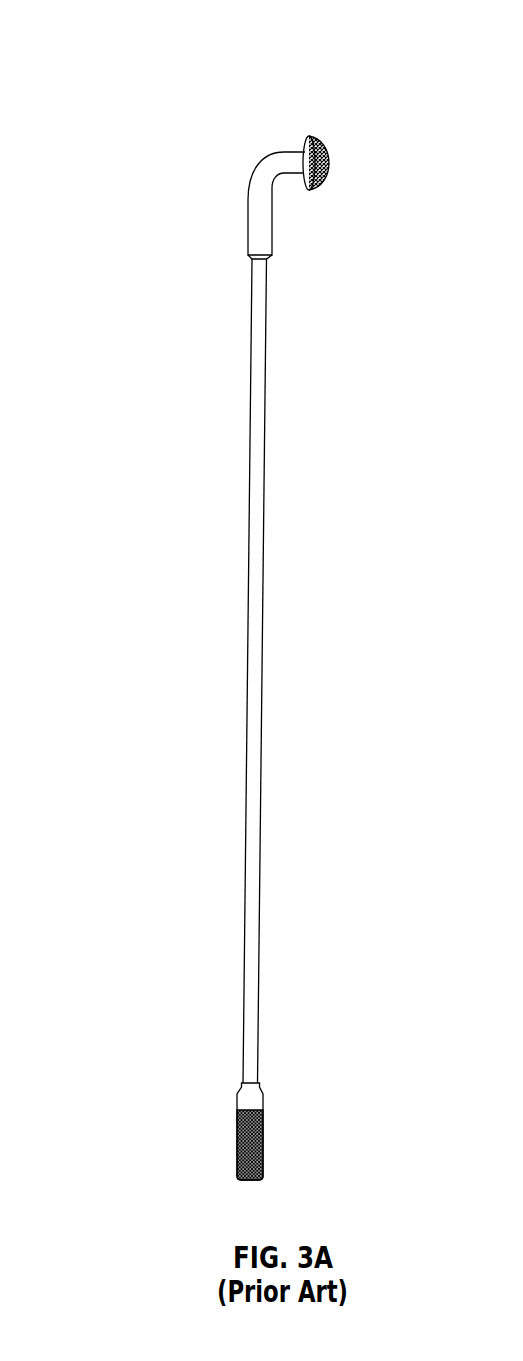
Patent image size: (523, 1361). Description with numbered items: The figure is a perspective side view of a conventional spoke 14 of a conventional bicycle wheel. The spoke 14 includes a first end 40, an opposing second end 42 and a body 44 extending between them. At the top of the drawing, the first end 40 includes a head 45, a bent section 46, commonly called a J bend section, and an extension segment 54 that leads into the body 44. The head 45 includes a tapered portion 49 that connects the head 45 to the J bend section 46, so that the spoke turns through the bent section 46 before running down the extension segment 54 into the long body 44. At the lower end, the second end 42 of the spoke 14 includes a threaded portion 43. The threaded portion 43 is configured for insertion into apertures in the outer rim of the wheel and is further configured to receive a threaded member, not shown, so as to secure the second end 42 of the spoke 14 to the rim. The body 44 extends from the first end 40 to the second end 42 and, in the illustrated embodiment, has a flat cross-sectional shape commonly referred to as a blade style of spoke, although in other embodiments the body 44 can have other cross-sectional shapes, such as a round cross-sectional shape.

The conventional spoke 14 is at (133, 38).
The first end 40 is at (168, 140).
The second end 42 is at (185, 1093).
The threaded portion 43 is at (281, 1094).
The body 44 is at (185, 268).
The head 45 is at (312, 138).
The bent section 46 is at (281, 152).
The tapered portion 49 is at (307, 191).
The extension segment 54 is at (246, 212).